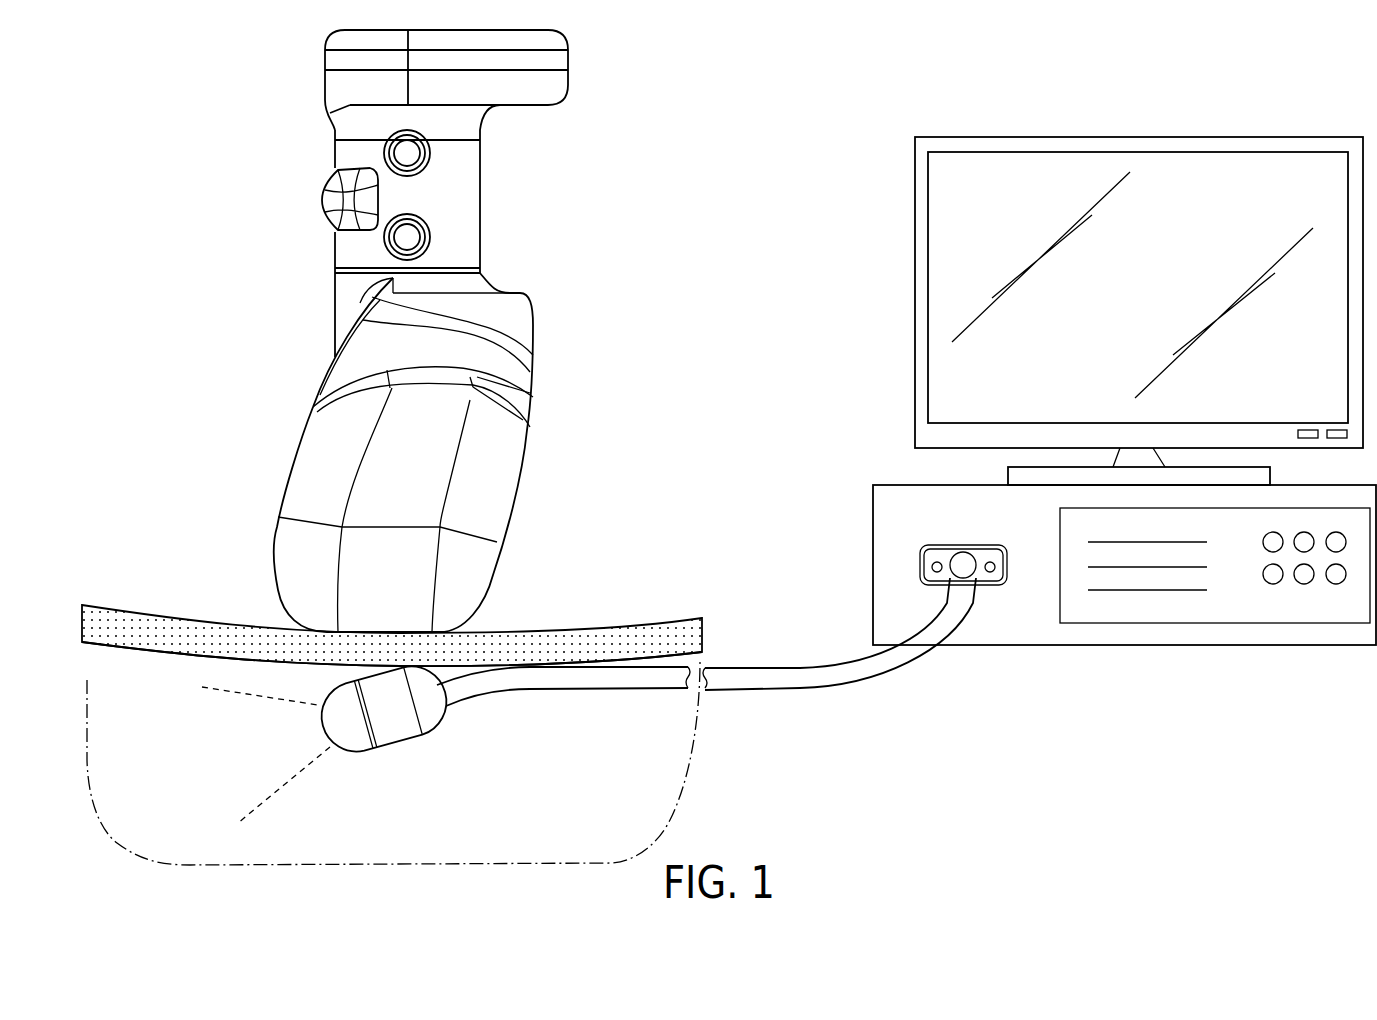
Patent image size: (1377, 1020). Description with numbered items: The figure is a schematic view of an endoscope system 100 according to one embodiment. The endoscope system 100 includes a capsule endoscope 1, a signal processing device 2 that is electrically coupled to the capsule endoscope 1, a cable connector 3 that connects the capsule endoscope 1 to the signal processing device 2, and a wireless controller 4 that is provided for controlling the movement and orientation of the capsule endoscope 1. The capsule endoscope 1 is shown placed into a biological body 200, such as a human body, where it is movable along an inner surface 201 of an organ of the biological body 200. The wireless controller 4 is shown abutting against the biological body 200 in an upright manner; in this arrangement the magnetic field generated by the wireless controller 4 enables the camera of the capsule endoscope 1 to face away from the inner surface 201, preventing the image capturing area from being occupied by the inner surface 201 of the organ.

The endoscope system 100 is at (140, 35).
The capsule endoscope 1 is at (398, 745).
The signal processing device 2 is at (873, 527).
The cable connector 3 is at (773, 670).
The wireless controller 4 is at (297, 450).
The biological body 200 is at (195, 625).
The inner surface 201 is at (117, 647).